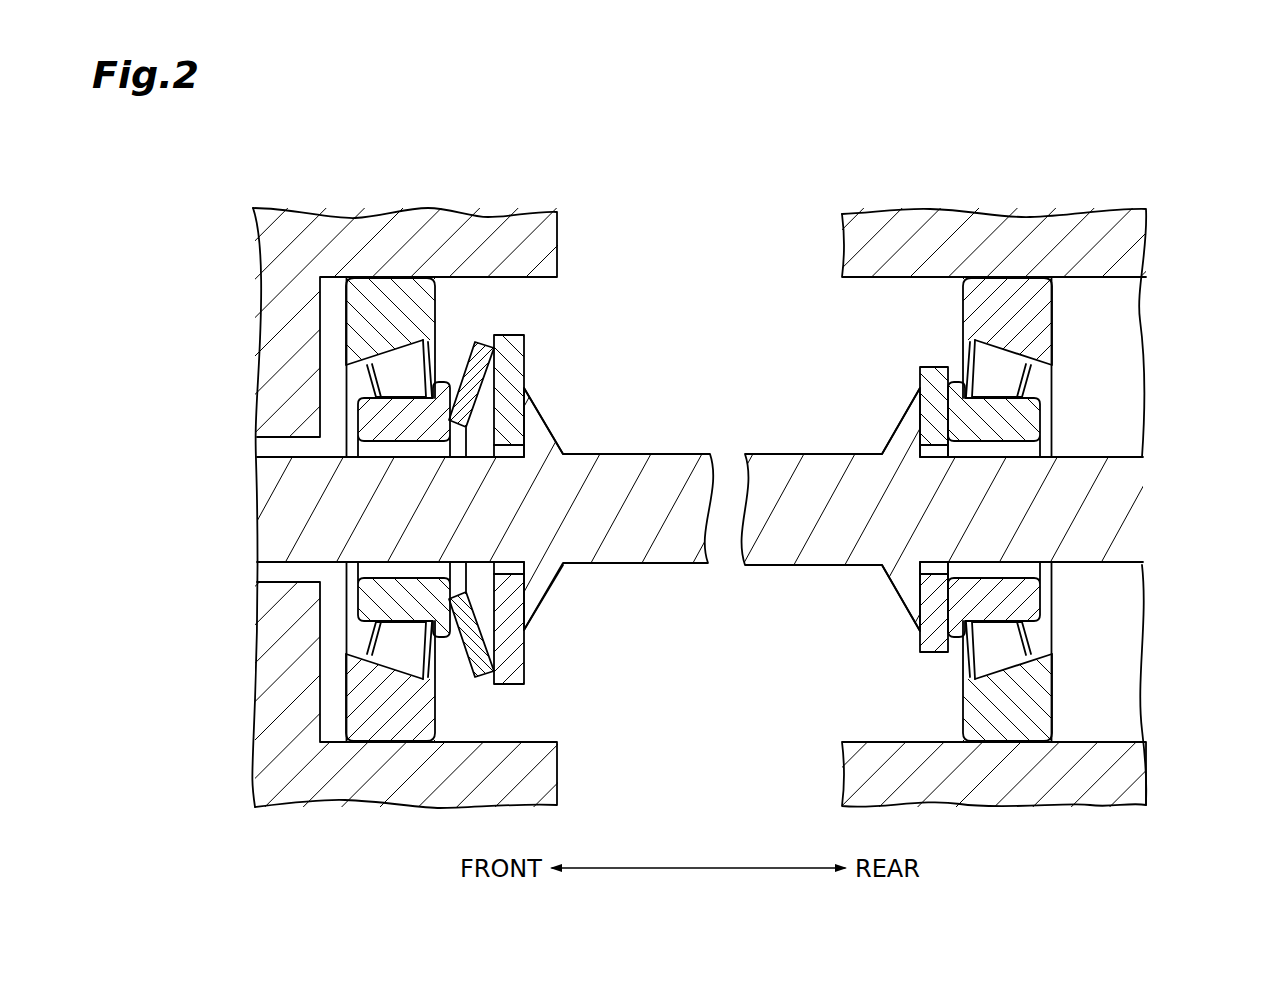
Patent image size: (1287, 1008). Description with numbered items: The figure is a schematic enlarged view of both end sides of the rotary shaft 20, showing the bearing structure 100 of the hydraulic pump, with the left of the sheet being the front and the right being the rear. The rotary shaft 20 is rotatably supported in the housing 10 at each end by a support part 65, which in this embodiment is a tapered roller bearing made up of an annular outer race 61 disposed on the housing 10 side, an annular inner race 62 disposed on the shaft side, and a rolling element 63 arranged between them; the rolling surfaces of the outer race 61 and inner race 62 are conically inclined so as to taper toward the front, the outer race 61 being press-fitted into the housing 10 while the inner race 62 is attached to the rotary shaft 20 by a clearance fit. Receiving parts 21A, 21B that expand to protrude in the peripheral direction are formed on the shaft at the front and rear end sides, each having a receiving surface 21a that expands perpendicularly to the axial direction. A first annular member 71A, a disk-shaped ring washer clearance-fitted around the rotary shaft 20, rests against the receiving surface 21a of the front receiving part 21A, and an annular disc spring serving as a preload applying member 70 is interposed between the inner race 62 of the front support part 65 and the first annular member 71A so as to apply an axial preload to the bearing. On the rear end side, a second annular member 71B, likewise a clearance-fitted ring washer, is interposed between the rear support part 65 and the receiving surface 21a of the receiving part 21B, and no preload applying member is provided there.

The bearing structure 100 is at (713, 190).
The housing 10 is at (250, 216).
The rotary shaft 20 is at (290, 503).
The receiving part 21A is at (543, 420).
The receiving part 21B is at (902, 430).
The receiving surface 21a is at (527, 622).
The outer race 61 is at (350, 318).
The inner race 62 is at (378, 425).
The rolling element 63 is at (403, 374).
The support part 65 is at (643, 504).
The preload applying member 70 is at (467, 350).
The first annular member 71A is at (518, 332).
The second annular member 71B is at (930, 364).